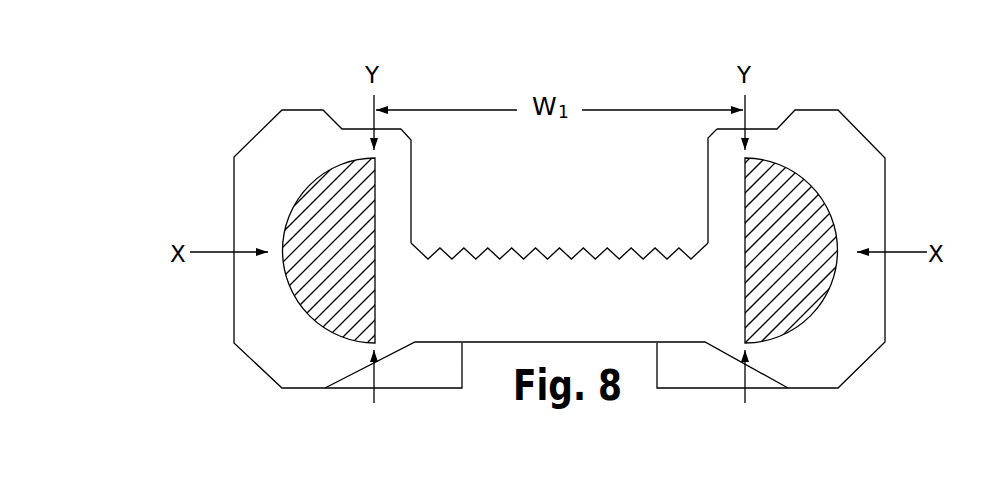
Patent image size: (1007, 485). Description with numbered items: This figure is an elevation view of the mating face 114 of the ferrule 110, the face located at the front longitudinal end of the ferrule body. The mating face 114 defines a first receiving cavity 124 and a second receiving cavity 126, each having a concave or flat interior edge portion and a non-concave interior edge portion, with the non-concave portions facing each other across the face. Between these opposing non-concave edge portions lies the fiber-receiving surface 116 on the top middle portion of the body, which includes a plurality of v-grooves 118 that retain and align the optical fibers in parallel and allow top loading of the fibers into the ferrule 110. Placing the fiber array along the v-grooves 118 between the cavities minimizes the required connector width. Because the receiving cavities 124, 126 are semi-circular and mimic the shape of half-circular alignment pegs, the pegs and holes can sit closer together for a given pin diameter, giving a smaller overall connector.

The ferrule 110 is at (252, 108).
The mating face 114 is at (552, 317).
The fiber-receiving surface 116 is at (498, 187).
The v-grooves 118 is at (547, 252).
The first receiving cavity 124 is at (768, 307).
The second receiving cavity 126 is at (323, 302).